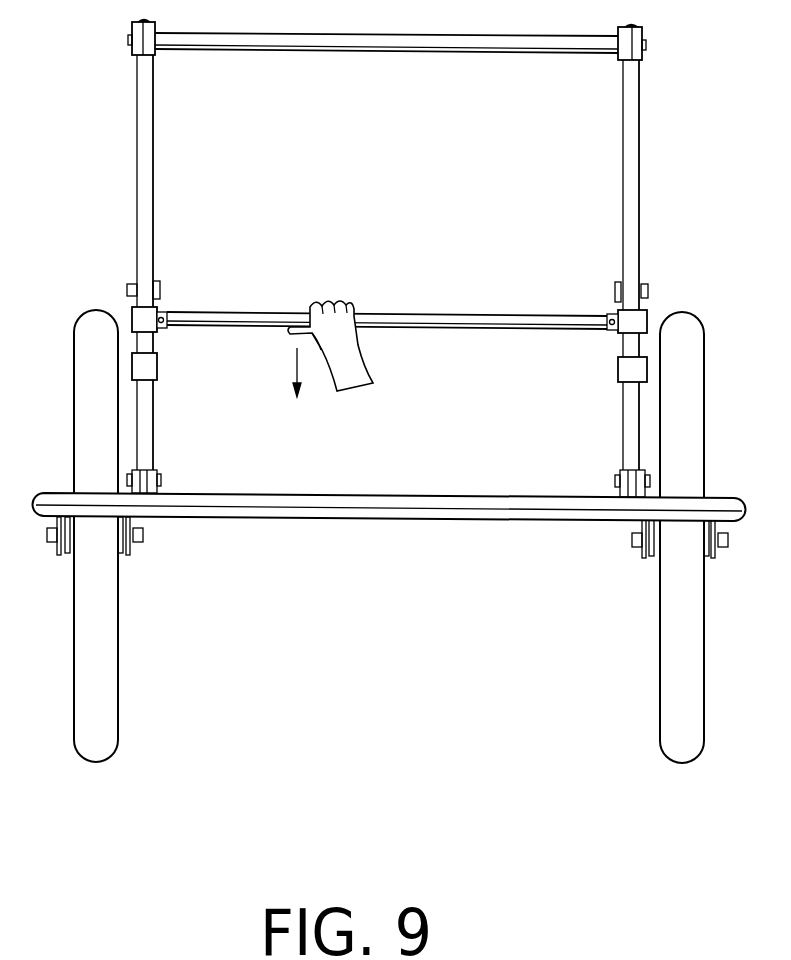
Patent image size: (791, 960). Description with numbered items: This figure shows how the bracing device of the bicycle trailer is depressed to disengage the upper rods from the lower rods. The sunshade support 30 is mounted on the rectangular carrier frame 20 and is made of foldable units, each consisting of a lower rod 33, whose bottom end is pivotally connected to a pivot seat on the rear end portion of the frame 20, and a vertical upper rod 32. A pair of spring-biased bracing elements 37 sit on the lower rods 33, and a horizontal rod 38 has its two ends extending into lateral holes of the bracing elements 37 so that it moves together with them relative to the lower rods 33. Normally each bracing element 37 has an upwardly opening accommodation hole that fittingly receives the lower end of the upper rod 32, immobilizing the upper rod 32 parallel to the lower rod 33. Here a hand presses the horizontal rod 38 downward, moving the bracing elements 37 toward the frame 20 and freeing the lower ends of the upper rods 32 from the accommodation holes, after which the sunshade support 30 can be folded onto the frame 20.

The carrier frame 20 is at (270, 523).
The sunshade support 30 is at (344, 259).
The upper rod 32 is at (145, 222).
The lower rod 33 is at (145, 433).
The bracing element 37 is at (157, 368).
The horizontal rod 38 is at (471, 322).